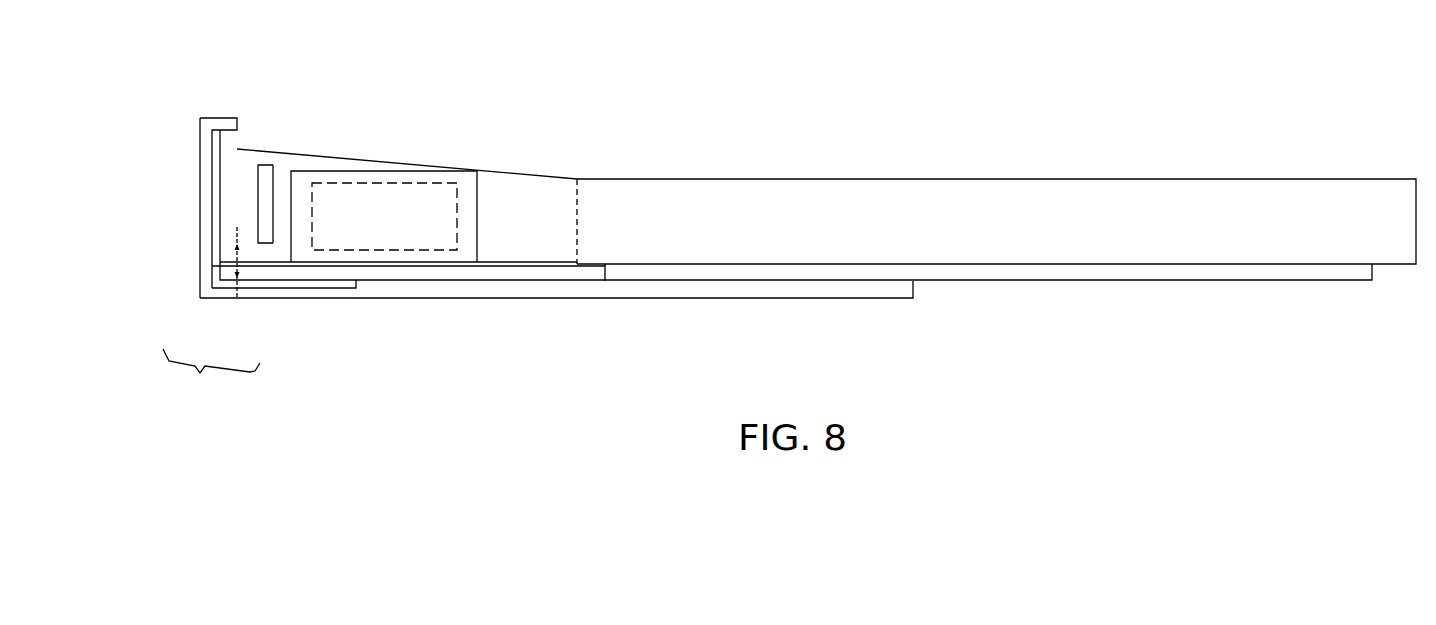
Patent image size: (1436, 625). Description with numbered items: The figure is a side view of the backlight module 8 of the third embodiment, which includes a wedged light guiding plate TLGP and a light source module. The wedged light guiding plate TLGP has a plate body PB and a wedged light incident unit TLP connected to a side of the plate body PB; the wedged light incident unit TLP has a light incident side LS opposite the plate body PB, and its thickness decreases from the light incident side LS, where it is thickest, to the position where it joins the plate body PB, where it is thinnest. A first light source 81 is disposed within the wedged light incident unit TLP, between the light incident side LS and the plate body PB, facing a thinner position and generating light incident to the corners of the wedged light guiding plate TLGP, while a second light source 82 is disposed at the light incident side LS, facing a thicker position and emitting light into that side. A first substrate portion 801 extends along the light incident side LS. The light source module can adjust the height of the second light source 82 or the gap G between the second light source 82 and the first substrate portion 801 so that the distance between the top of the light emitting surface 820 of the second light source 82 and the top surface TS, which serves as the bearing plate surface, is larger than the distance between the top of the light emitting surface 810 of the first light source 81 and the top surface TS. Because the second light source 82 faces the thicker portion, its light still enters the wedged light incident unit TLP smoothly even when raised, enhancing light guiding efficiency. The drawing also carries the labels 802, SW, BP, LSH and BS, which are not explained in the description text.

The backlight module 8 is at (321, 43).
The second light source 82 is at (231, 119).
The light emitting surface of the second light source 820 is at (266, 165).
The light incident side LS is at (274, 175).
The light emitting surface of the first light source 810 is at (360, 200).
The first light source 81 is at (478, 210).
The wedged light guiding plate TLGP is at (800, 178).
The wedged light incident unit TLP is at (554, 237).
The plate body PB is at (1023, 239).
The inner wall 802 is at (220, 143).
The gap G is at (233, 259).
The side wall SW is at (203, 245).
The bottom plate BP is at (276, 298).
The light source housing LSH is at (211, 376).
The top surface TS is at (283, 262).
The bottom sheet BS is at (395, 282).
The first substrate portion 801 is at (546, 267).